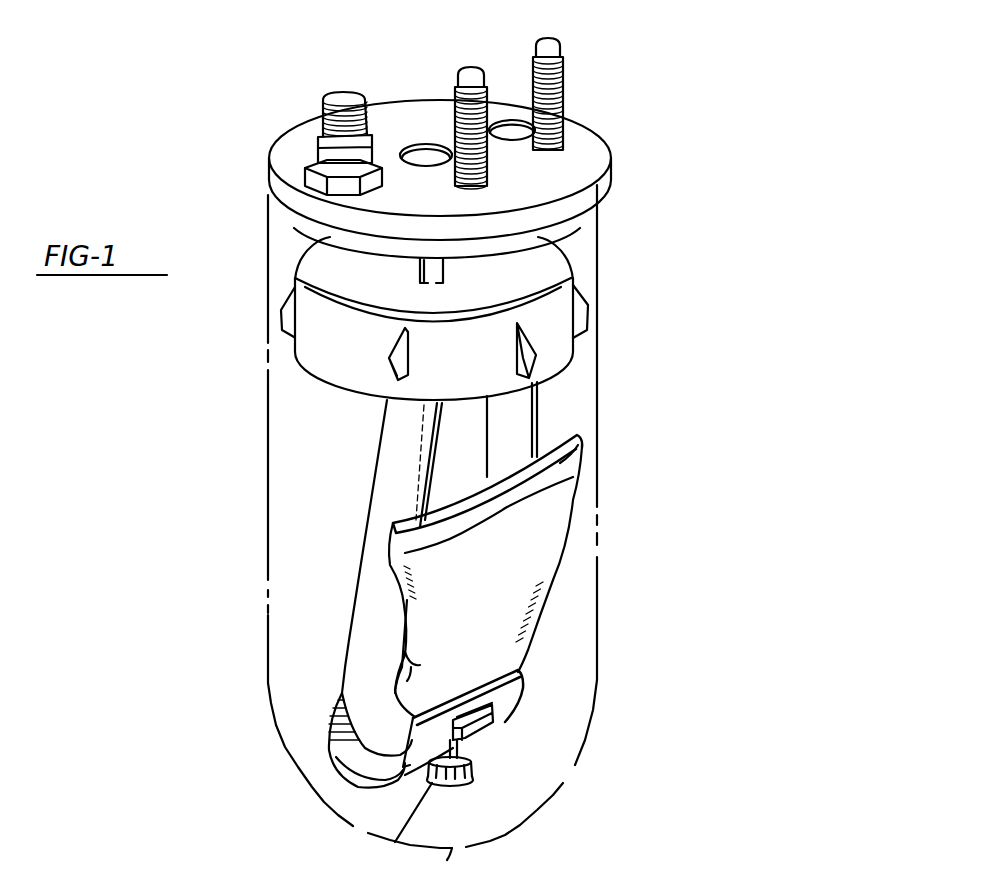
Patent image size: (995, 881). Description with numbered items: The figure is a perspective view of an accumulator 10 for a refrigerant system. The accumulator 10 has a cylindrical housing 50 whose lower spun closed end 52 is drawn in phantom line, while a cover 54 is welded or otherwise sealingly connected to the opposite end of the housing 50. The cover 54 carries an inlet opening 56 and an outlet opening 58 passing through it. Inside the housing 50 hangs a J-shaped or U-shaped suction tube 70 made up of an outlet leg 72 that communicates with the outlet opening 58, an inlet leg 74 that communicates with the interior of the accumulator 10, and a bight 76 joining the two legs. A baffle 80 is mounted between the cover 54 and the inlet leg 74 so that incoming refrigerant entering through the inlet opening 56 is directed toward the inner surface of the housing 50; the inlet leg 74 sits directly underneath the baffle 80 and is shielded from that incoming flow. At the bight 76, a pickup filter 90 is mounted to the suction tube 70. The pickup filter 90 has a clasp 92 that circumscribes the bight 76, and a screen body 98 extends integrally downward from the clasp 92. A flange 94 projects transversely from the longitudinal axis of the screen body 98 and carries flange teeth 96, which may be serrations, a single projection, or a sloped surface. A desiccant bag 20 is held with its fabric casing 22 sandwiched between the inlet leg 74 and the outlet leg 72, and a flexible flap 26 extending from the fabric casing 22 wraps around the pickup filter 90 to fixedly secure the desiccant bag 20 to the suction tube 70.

The accumulator 10 is at (192, 470).
The desiccant bag 20 is at (563, 463).
The fabric casing 22 is at (543, 552).
The flexible flap 26 is at (427, 737).
The cylindrical housing 50 is at (597, 625).
The spun closed end 52 is at (470, 863).
The cover 54 is at (583, 160).
The inlet opening 56 is at (423, 163).
The outlet opening 58 is at (510, 133).
The suction tube 70 is at (380, 603).
The outlet leg 72 is at (517, 430).
The inlet leg 74 is at (408, 440).
The bight 76 is at (395, 740).
The baffle 80 is at (338, 323).
The pickup filter 90 is at (490, 772).
The clasp 92 is at (483, 742).
The flange 94 is at (493, 722).
The flange teeth 96 is at (483, 699).
The screen body 98 is at (403, 840).